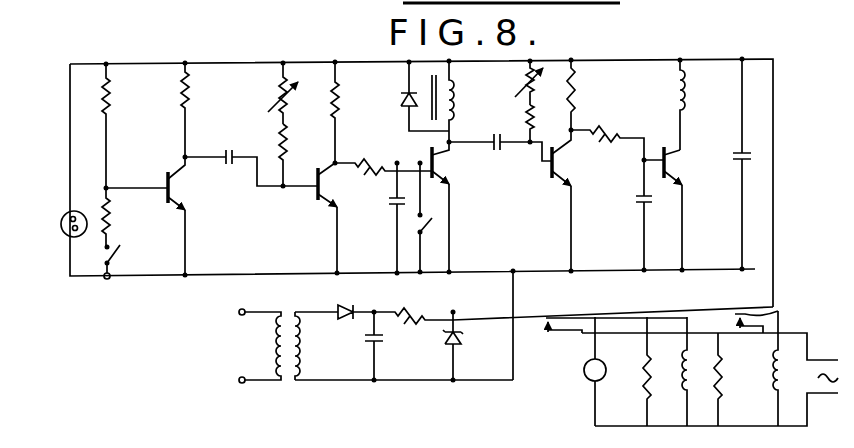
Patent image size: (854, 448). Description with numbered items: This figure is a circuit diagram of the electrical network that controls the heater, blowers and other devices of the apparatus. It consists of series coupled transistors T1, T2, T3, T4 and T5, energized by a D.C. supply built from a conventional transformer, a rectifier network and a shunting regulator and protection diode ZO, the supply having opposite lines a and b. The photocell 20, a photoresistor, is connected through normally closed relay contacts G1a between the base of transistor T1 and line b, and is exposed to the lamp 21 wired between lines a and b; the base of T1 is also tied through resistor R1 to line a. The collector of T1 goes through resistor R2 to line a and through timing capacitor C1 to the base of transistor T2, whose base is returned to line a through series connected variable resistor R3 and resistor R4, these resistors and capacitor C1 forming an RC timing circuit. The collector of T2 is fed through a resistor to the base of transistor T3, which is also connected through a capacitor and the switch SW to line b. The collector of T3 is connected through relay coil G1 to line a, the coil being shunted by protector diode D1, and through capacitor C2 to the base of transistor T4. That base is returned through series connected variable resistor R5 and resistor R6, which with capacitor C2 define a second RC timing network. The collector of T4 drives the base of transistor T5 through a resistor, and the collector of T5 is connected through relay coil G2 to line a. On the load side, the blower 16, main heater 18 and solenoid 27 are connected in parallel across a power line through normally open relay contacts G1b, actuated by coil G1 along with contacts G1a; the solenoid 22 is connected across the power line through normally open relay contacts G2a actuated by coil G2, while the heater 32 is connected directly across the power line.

The lamp 21 is at (62, 215).
The photocell 20 is at (112, 213).
The normally closed relay contacts G1a is at (113, 260).
The normally open relay contacts G1b is at (613, 336).
The normally open relay contacts G2a is at (778, 311).
The relay coil G1 is at (463, 89).
The relay coil G2 is at (700, 105).
The resistor R1 is at (111, 101).
The resistor R2 is at (190, 101).
The variable resistor R3 is at (296, 93).
The resistor R4 is at (287, 141).
The variable resistor R5 is at (543, 83).
The resistor R6 is at (546, 122).
The transistor T1 is at (163, 216).
The transistor T2 is at (323, 206).
The transistor T3 is at (440, 171).
The transistor T4 is at (558, 174).
The transistor T5 is at (676, 172).
The timing capacitor C1 is at (233, 148).
The capacitor C2 is at (500, 152).
The protector diode D1 is at (401, 96).
The switch SW is at (437, 221).
The shunting regulator and protection diode ZO is at (462, 338).
The blower 16 is at (588, 378).
The main heater 18 is at (641, 377).
The solenoid 27 is at (682, 368).
The heater 32 is at (733, 379).
The solenoid 22 is at (773, 373).
The supply line a is at (221, 62).
The supply line b is at (218, 278).